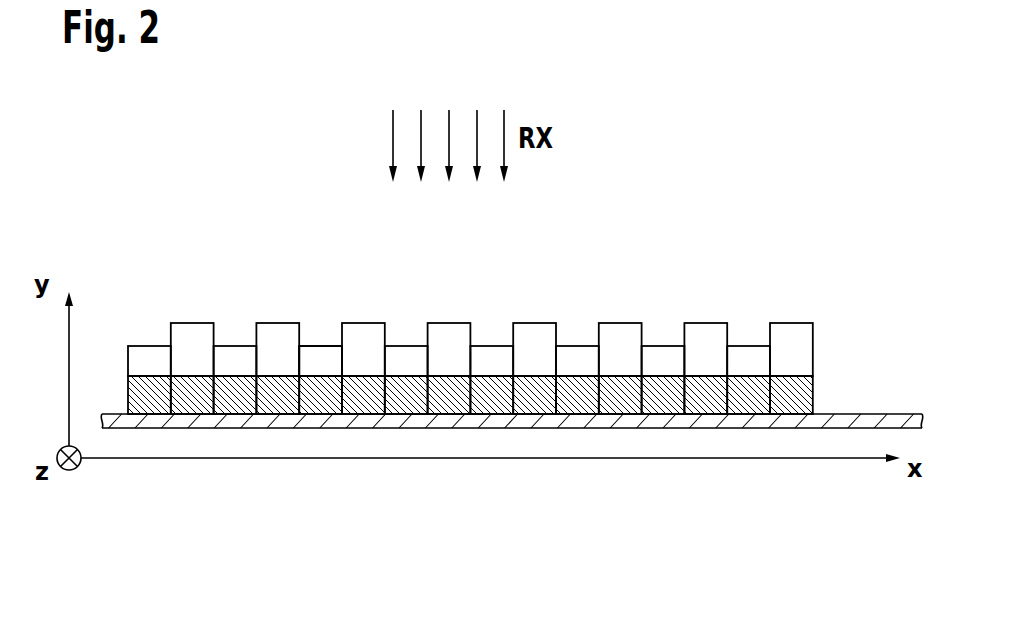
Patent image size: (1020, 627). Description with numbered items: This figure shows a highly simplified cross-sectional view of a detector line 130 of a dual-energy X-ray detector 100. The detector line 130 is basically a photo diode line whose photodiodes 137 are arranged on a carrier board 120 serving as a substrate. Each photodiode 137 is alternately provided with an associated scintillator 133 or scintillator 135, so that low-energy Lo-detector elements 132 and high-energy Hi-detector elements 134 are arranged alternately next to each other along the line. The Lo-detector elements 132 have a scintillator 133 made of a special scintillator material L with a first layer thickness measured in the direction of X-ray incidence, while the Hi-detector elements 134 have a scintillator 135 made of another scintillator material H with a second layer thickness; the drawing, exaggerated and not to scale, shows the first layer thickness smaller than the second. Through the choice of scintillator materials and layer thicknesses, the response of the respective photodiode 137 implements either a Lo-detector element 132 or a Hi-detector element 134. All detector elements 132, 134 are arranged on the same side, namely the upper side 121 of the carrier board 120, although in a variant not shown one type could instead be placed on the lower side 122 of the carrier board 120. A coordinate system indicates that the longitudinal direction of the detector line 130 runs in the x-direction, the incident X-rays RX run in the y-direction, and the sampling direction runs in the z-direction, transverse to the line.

The dual-energy X-ray detector 100 is at (832, 298).
The carrier board 120 is at (512, 421).
The upper side of the carrier board 121 is at (848, 414).
The lower side of the carrier board 122 is at (848, 440).
The detector line 130 is at (122, 396).
The Lo-detector element 132 is at (150, 300).
The scintillator of the Lo-detector element 133 is at (327, 343).
The Hi-detector element 134 is at (793, 314).
The scintillator of the Hi-detector element 135 is at (367, 330).
The photodiode 137 is at (150, 407).